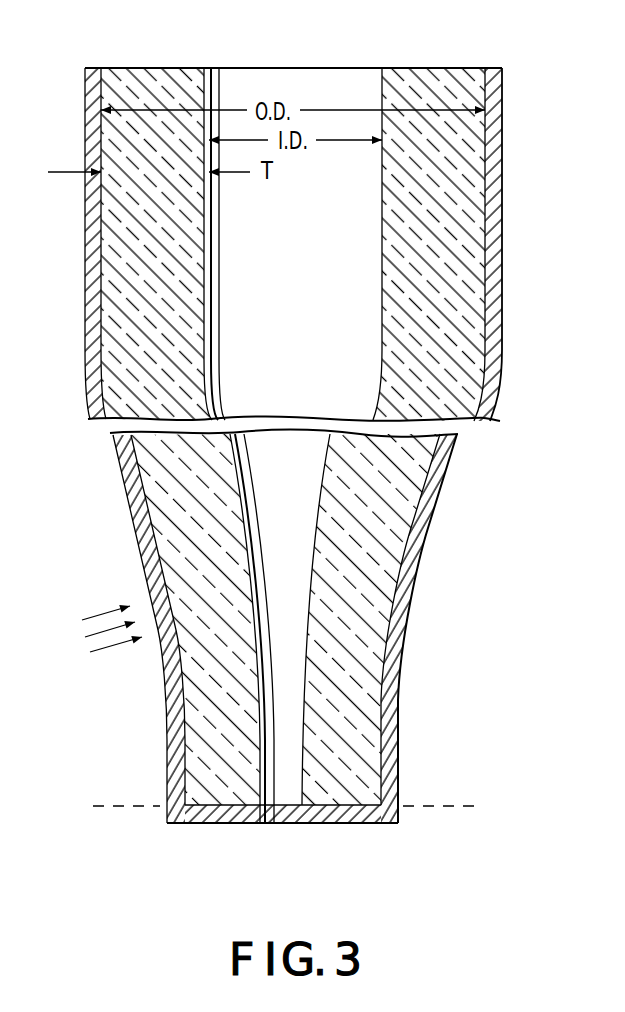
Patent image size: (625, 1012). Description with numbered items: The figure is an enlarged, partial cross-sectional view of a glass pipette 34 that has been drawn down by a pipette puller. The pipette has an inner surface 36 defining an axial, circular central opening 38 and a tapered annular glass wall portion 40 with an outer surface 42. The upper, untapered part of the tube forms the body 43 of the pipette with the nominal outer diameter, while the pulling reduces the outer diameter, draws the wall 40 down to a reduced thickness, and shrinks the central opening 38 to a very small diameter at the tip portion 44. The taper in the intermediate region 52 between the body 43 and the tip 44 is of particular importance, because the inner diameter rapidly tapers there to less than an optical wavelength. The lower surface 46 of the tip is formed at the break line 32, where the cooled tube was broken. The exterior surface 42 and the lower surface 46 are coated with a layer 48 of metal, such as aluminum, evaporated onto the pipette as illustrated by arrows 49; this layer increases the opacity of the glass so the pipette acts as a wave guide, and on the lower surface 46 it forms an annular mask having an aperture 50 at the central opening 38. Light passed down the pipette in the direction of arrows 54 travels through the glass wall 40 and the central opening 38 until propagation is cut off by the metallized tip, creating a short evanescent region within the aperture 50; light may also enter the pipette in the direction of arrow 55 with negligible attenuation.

The break line 32 is at (115, 806).
The upper pipette 34 is at (458, 67).
The inner surface 36 is at (325, 460).
The central opening 38 is at (322, 98).
The tapered annular glass wall portion 40 is at (383, 556).
The outer surface 42 is at (391, 603).
The body 43 is at (505, 163).
The tip portion 44 is at (421, 771).
The lower surface 46 is at (333, 823).
The layer of metal 48 is at (398, 672).
The arrows 49 is at (113, 662).
The aperture 50 is at (268, 824).
The intermediate region 52 is at (467, 463).
The arrows 54 is at (257, 59).
The arrow 55 is at (285, 865).